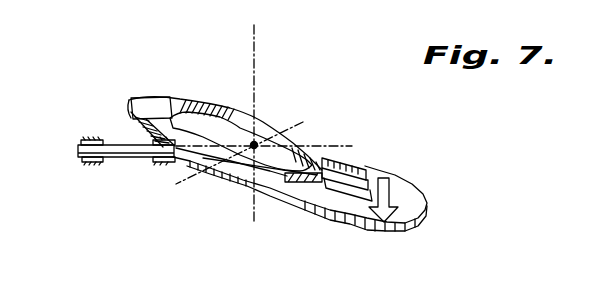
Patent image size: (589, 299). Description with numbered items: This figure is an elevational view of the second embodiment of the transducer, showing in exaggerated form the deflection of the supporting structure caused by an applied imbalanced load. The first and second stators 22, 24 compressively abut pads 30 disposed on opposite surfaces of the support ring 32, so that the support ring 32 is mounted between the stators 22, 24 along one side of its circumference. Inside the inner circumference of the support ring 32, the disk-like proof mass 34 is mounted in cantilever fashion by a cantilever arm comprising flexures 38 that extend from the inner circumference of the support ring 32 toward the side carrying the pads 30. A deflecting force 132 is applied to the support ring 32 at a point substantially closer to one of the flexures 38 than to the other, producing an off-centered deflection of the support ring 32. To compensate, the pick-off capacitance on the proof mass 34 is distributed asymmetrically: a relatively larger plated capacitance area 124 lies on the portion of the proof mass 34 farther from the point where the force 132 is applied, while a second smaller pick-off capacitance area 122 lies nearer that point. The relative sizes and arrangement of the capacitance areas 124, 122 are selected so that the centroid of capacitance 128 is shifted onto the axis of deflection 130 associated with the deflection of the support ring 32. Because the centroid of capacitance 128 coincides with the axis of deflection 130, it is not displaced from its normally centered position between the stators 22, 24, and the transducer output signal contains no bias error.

The first stator 22 is at (84, 160).
The second stator 24 is at (88, 139).
The pads 30 is at (79, 143).
The support ring 32 is at (341, 227).
The proof mass 34 is at (153, 120).
The flexures 38 is at (348, 173).
The second smaller pick-off capacitance area 122 is at (280, 184).
The relatively larger plated capacitance area 124 is at (204, 100).
The centroid of capacitance 128 is at (256, 141).
The axis of deflection 130 is at (307, 120).
The deflecting force 132 is at (400, 185).